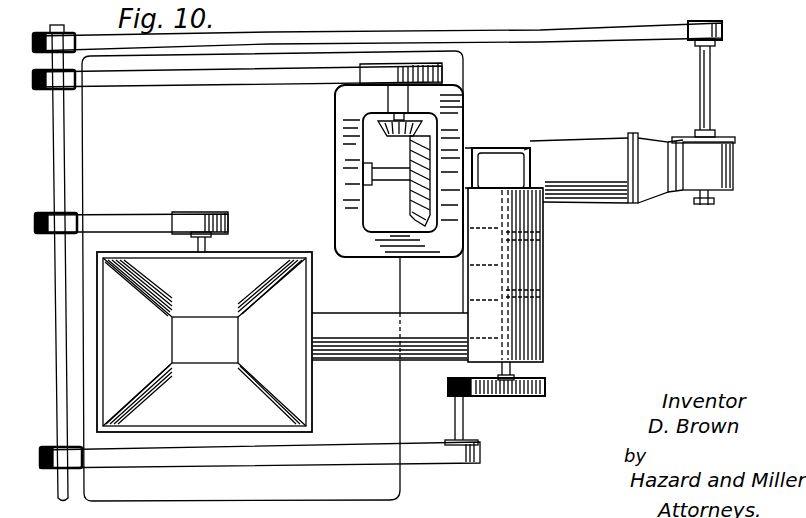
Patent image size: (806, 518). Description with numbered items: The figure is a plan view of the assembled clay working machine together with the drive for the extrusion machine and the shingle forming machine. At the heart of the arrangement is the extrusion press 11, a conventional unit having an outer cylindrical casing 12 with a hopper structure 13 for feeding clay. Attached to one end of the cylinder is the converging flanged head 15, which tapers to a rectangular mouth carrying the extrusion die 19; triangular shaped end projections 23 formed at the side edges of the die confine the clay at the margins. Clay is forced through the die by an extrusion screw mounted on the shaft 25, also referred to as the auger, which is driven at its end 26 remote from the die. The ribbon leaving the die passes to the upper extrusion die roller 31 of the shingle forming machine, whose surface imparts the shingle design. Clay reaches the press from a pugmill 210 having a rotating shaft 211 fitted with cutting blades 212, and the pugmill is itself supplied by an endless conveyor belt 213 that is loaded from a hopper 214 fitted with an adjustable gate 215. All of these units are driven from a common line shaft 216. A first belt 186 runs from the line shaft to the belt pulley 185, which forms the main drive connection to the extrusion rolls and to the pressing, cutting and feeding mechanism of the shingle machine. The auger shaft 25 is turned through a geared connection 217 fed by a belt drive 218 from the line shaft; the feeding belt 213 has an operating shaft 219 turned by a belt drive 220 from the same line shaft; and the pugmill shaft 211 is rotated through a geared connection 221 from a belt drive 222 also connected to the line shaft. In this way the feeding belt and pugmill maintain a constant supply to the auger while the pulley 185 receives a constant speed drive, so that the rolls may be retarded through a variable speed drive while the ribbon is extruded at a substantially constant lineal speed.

The extrusion press 11 is at (569, 162).
The outer cylindrical casing 12 is at (602, 160).
The hopper structure 13 is at (522, 150).
The converging flanged head 15 is at (645, 155).
The extrusion die 19 is at (677, 183).
The triangular shaped end projections 23 is at (696, 192).
The shaft 25 is at (487, 170).
The end 26 is at (398, 181).
The upper extrusion die roller 31 is at (716, 156).
The belt pulley 185 is at (723, 27).
The belt 186 is at (566, 36).
The pugmill 210 is at (527, 266).
The rotating shaft 211 is at (527, 236).
The cutting blades 212 is at (527, 291).
The endless conveyor belt 213 is at (381, 345).
The hopper 214 is at (291, 308).
The adjustable gate 215 is at (240, 345).
The line shaft 216 is at (56, 147).
The geared connection 217 is at (409, 143).
The belt drive 218 is at (260, 78).
The operating shaft 219 is at (210, 243).
The belt drive 220 is at (118, 223).
The geared connection 221 is at (470, 396).
The belt drive 222 is at (360, 452).